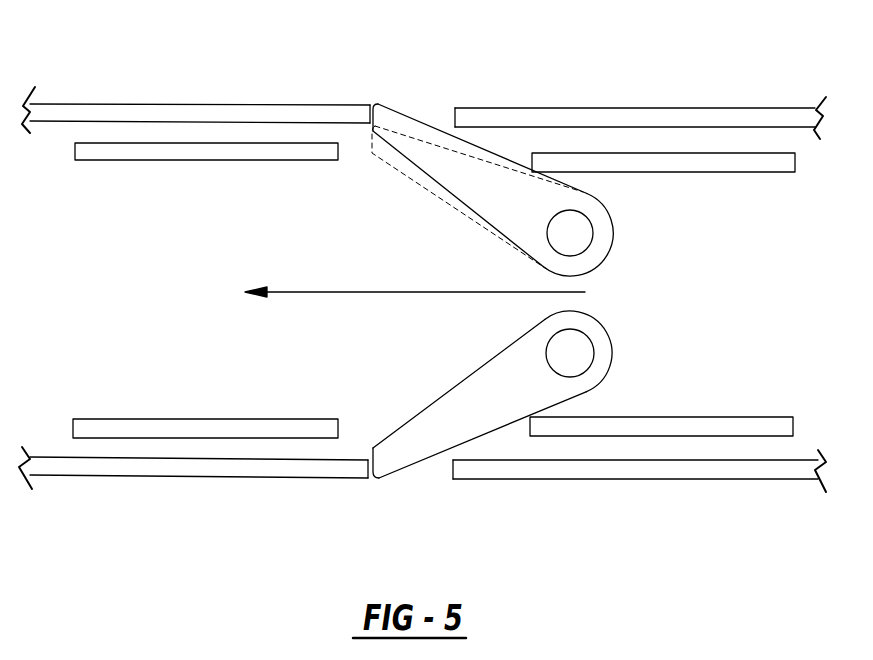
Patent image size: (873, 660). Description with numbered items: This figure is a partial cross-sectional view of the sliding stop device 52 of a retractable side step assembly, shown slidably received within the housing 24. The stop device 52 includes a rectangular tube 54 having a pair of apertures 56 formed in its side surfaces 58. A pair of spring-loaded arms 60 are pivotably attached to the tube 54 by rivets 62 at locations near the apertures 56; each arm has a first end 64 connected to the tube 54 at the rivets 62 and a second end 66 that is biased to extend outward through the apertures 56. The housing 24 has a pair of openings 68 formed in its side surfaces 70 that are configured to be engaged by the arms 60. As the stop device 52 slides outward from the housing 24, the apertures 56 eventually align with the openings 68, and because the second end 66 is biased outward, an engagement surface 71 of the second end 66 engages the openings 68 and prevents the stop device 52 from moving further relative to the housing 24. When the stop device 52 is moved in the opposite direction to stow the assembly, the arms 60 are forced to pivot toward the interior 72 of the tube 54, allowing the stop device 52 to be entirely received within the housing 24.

The housing 24 is at (705, 480).
The sliding stop device 52 is at (733, 415).
The rectangular tube 54 is at (772, 172).
The apertures 56 is at (340, 155).
The side surfaces 58 is at (663, 153).
The spring-loaded arms 60 is at (460, 178).
The rivets 62 is at (580, 234).
The first end 64 is at (597, 255).
The second end 66 is at (403, 114).
The openings 68 is at (455, 108).
The side surfaces 70 is at (610, 108).
The engagement surface 71 is at (368, 113).
The interior 72 is at (122, 283).